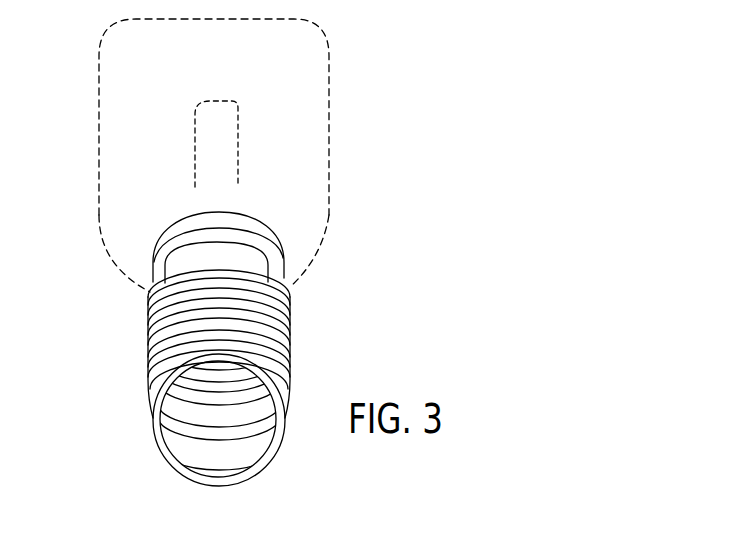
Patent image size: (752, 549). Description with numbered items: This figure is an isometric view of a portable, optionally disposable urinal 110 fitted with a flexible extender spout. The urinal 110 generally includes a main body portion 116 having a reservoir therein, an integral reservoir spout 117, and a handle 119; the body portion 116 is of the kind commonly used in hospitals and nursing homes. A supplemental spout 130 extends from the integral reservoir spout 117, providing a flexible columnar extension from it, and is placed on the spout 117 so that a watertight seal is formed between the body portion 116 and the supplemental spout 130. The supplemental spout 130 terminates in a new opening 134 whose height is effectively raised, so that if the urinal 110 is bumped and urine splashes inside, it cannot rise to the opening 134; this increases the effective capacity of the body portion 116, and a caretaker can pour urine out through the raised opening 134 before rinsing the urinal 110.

The portable urinal 110 is at (84, 341).
The main body portion 116 is at (312, 86).
The handle 119 is at (208, 99).
The spout 117 is at (283, 232).
The supplemental spout 130 is at (301, 347).
The opening 134 is at (228, 490).